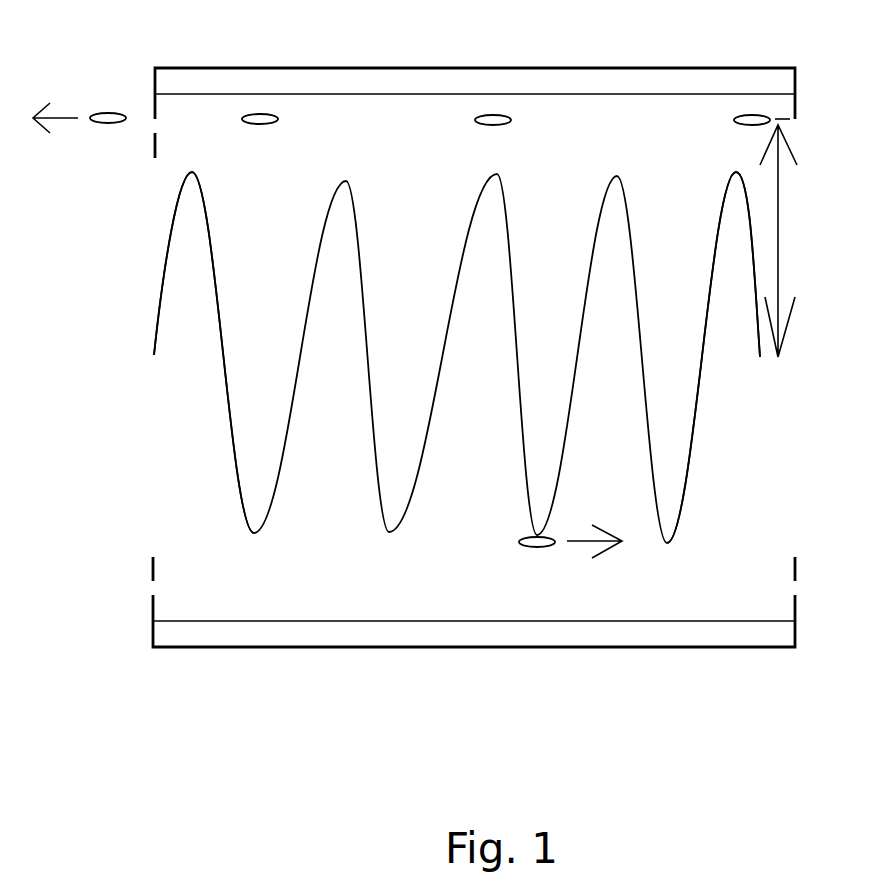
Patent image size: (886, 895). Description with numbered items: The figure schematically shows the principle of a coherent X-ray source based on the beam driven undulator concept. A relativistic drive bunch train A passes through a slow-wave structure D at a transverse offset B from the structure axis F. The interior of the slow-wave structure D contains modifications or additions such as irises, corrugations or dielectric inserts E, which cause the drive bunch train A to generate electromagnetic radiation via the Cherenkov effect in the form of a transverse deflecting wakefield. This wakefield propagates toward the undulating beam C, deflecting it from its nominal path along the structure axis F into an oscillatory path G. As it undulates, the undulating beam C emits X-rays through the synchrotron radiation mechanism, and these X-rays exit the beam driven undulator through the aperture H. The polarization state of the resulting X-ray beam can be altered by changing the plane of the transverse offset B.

The relativistic drive bunch train A is at (746, 118).
The transverse offset B is at (790, 241).
The undulating beam C is at (570, 560).
The slow-wave structure D is at (257, 67).
The interior modifications E is at (360, 85).
The structure axis F is at (457, 357).
The oscillatory path G is at (204, 352).
The aperture H is at (713, 357).